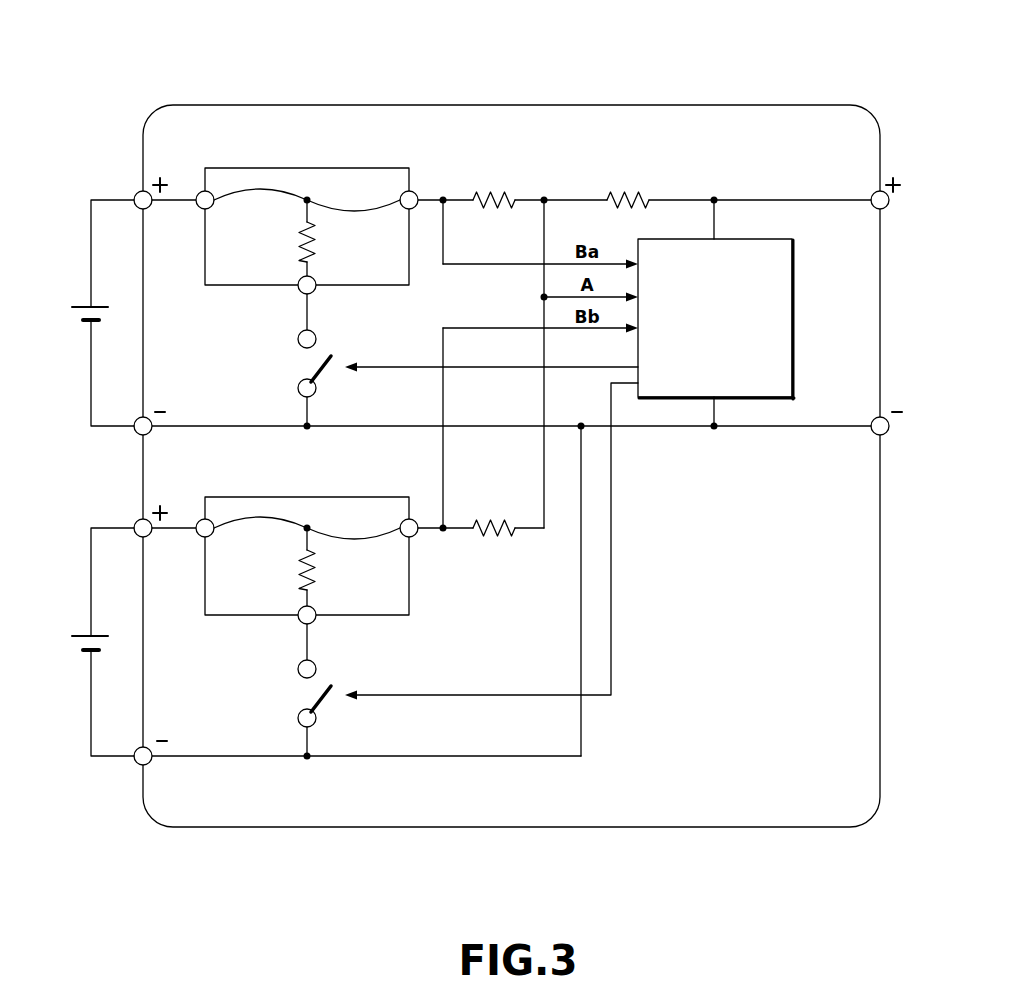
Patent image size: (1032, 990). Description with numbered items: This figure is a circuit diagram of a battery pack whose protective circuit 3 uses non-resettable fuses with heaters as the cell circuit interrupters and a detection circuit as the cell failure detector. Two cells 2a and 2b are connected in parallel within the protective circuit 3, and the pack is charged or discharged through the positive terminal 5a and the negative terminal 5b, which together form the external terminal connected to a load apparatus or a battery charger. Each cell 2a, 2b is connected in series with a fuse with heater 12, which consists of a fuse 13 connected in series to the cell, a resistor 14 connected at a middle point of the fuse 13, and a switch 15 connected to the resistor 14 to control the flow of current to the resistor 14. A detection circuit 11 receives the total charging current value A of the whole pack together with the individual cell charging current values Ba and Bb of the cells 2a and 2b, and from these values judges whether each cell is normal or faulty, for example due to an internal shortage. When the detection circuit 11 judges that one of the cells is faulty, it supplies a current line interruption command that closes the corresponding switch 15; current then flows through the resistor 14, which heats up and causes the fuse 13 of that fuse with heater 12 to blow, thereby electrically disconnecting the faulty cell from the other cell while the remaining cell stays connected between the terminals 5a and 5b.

The protective circuit 3 is at (654, 80).
The cell 2a is at (80, 305).
The cell 2b is at (80, 634).
The positive terminal 5a is at (888, 208).
The negative terminal 5b is at (888, 434).
The detection circuit 11 is at (794, 291).
The fuse with heater 12 is at (361, 168).
The fuse 13 is at (250, 187).
The resistor 14 is at (297, 243).
The switch 15 is at (318, 379).